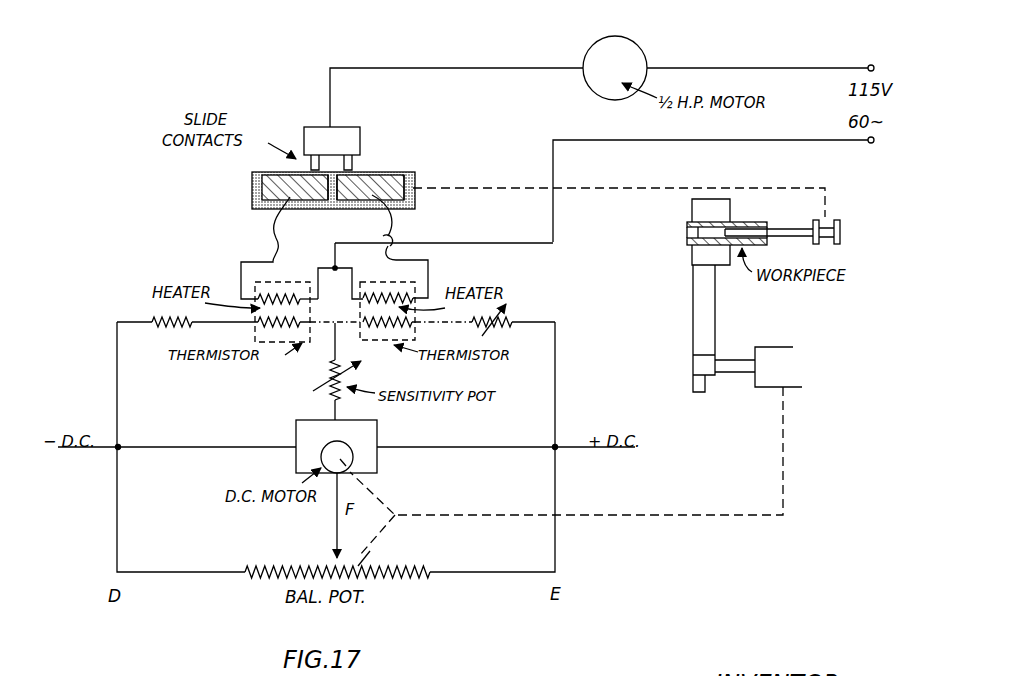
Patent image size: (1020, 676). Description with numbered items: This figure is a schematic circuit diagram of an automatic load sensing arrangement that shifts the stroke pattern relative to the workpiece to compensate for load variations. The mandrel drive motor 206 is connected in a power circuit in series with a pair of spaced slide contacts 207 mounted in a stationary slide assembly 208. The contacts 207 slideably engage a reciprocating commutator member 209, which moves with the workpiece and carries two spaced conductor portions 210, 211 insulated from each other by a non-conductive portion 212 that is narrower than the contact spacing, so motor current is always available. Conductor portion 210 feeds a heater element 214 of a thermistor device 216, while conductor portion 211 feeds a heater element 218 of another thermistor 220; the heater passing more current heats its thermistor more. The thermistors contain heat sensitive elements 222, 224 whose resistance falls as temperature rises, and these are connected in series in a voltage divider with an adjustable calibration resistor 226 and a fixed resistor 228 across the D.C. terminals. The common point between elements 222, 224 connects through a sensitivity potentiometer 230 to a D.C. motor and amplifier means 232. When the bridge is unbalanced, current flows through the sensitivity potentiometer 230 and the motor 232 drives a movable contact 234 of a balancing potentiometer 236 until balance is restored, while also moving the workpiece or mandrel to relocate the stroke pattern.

The mandrel drive motor 206 is at (630, 50).
The slide contacts 207 is at (330, 158).
The slide assembly 208 is at (350, 128).
The commutator member 209 is at (413, 182).
The conductor portion 210 is at (252, 186).
The conductor portion 211 is at (385, 182).
The non-conductive portion 212 is at (338, 192).
The heater element 214 is at (280, 297).
The thermistor device 216 is at (263, 280).
The heater element 218 is at (396, 303).
The thermistor 220 is at (385, 280).
The heat sensitive element 222 is at (262, 328).
The heat sensitive element 224 is at (382, 329).
The adjustable calibration resistor 226 is at (510, 314).
The fixed resistor 228 is at (168, 318).
The sensitivity potentiometer 230 is at (325, 381).
The D.C. motor and amplifier means 232 is at (380, 467).
The movable contact 234 is at (333, 558).
The balancing potentiometer 236 is at (398, 566).